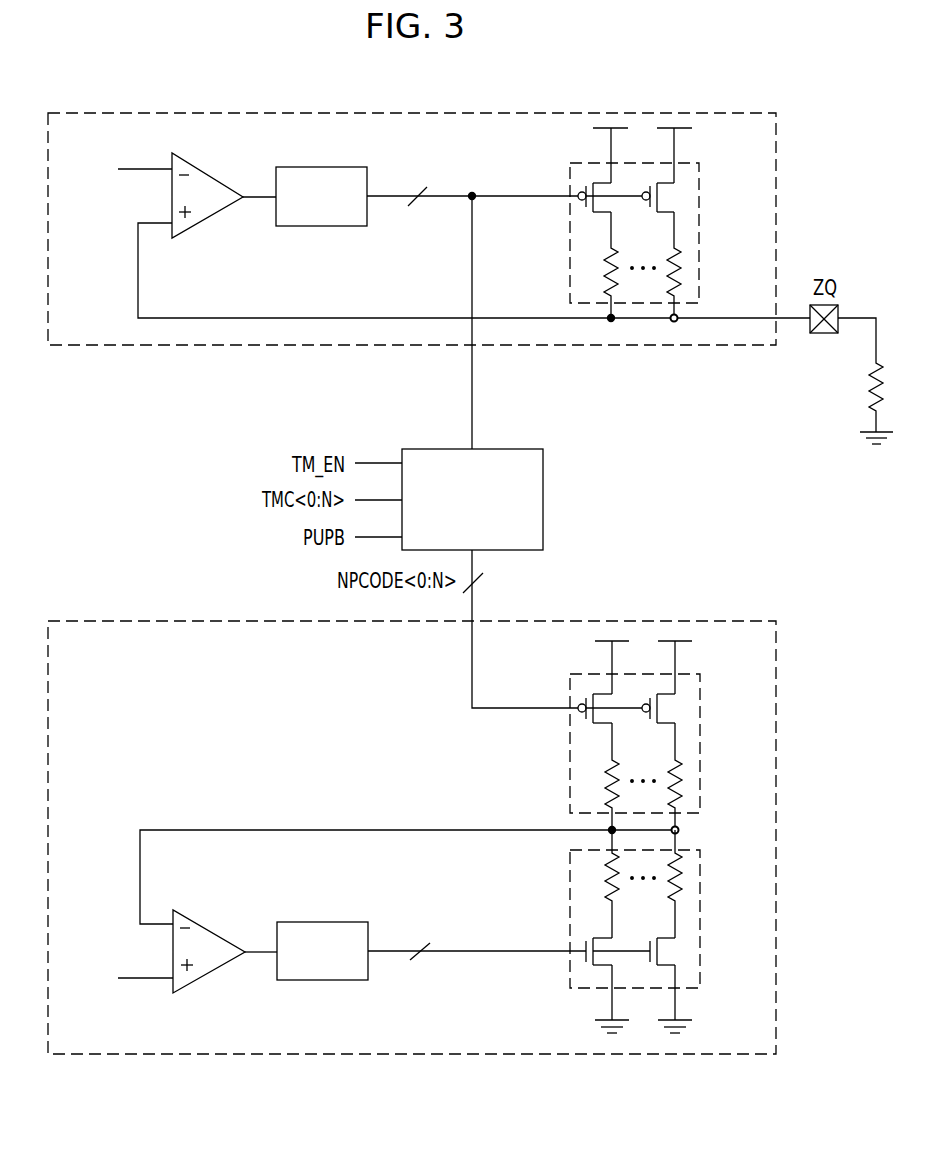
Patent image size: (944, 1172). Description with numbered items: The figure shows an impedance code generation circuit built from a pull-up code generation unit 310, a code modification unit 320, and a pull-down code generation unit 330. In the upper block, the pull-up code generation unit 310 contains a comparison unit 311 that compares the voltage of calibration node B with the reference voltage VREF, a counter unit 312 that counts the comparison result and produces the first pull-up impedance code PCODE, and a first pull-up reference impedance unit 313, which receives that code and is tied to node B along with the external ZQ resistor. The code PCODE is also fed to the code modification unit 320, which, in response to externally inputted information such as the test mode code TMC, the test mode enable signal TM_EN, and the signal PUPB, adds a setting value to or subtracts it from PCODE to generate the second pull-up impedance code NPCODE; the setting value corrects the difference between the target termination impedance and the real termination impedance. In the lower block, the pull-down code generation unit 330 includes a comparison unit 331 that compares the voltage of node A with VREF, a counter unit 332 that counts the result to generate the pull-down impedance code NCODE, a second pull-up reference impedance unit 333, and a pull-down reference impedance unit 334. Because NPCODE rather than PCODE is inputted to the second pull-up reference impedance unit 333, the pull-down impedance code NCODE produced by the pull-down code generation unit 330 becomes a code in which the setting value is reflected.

The pull-up code generation unit 310 is at (776, 228).
The comparison unit 311 is at (208, 173).
The counter unit 312 is at (322, 167).
The first pull-up reference impedance unit 313 is at (699, 210).
The code modification unit 320 is at (543, 500).
The pull-down code generation unit 330 is at (776, 837).
The comparison unit 331 is at (210, 928).
The counter unit 332 is at (322, 922).
The second pull-up reference impedance unit 333 is at (700, 722).
The pull-down reference impedance unit 334 is at (700, 898).